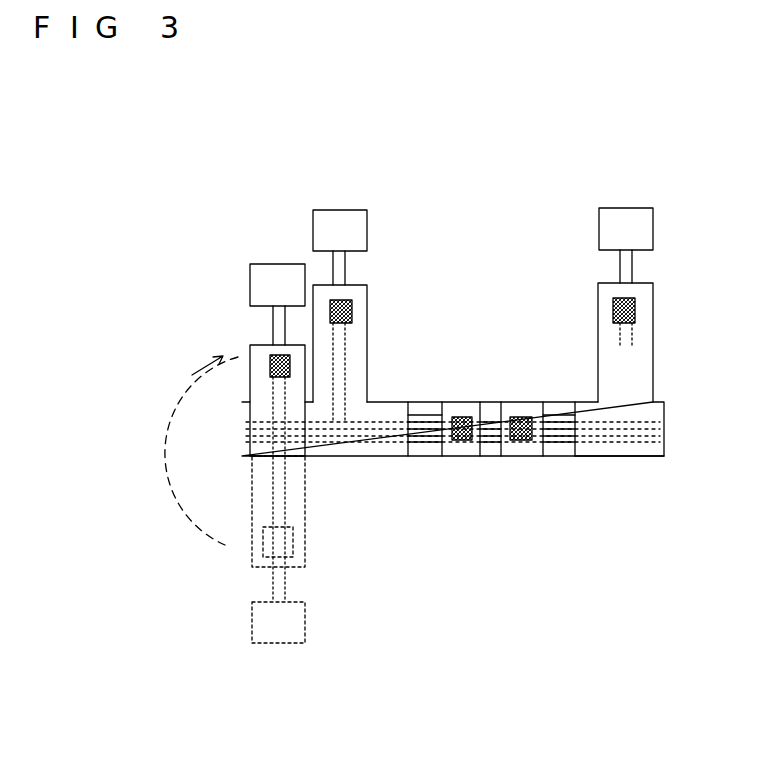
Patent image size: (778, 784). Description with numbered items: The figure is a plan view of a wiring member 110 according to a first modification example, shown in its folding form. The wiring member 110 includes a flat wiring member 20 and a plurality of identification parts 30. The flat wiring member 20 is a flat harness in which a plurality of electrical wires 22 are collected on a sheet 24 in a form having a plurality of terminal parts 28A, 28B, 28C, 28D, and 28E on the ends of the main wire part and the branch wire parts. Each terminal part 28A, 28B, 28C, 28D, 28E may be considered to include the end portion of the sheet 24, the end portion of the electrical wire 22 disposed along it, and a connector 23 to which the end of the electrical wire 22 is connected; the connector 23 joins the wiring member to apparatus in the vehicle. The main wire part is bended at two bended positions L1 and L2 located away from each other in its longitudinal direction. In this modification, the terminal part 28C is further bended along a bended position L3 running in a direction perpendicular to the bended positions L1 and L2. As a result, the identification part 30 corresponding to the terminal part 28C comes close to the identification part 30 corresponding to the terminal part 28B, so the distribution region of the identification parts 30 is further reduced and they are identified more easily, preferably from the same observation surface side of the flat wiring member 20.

The wiring member 110 is at (548, 221).
The flat wiring member 20 is at (490, 401).
The electrical wire 22 is at (417, 445).
The connector 23 is at (280, 263).
The sheet 24 is at (250, 346).
The terminal part 28A is at (388, 401).
The terminal part 28B is at (251, 360).
The terminal part 28C is at (367, 288).
The terminal part 28D is at (653, 285).
The terminal part 28E is at (596, 457).
The identification part 30 is at (270, 378).
The bended position L1 is at (241, 446).
The bended position L2 is at (664, 428).
The bended position L3 is at (293, 456).